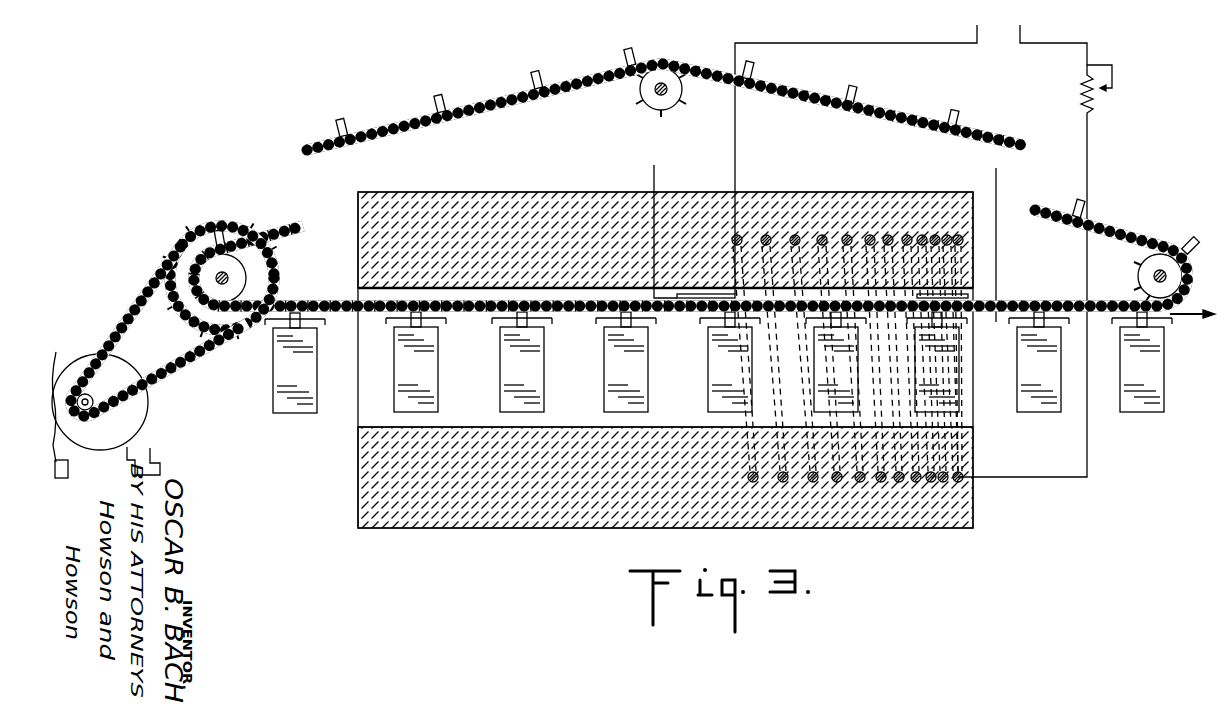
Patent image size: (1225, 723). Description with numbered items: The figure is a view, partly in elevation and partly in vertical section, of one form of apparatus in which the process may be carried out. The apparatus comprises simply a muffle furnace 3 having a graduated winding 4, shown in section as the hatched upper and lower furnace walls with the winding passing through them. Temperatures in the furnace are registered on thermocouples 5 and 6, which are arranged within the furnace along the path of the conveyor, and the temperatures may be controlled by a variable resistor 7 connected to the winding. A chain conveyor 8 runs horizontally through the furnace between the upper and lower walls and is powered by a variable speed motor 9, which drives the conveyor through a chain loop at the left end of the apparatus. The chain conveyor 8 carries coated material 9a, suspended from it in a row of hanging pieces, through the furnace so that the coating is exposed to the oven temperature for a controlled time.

The muffle furnace 3 is at (945, 518).
The graduated winding 4 is at (868, 240).
The thermocouple 5 is at (700, 294).
The thermocouple 6 is at (948, 294).
The variable resistor 7 is at (1092, 100).
The chain conveyor 8 is at (297, 229).
The variable speed motor 9 is at (138, 418).
The coated material 9a is at (296, 414).